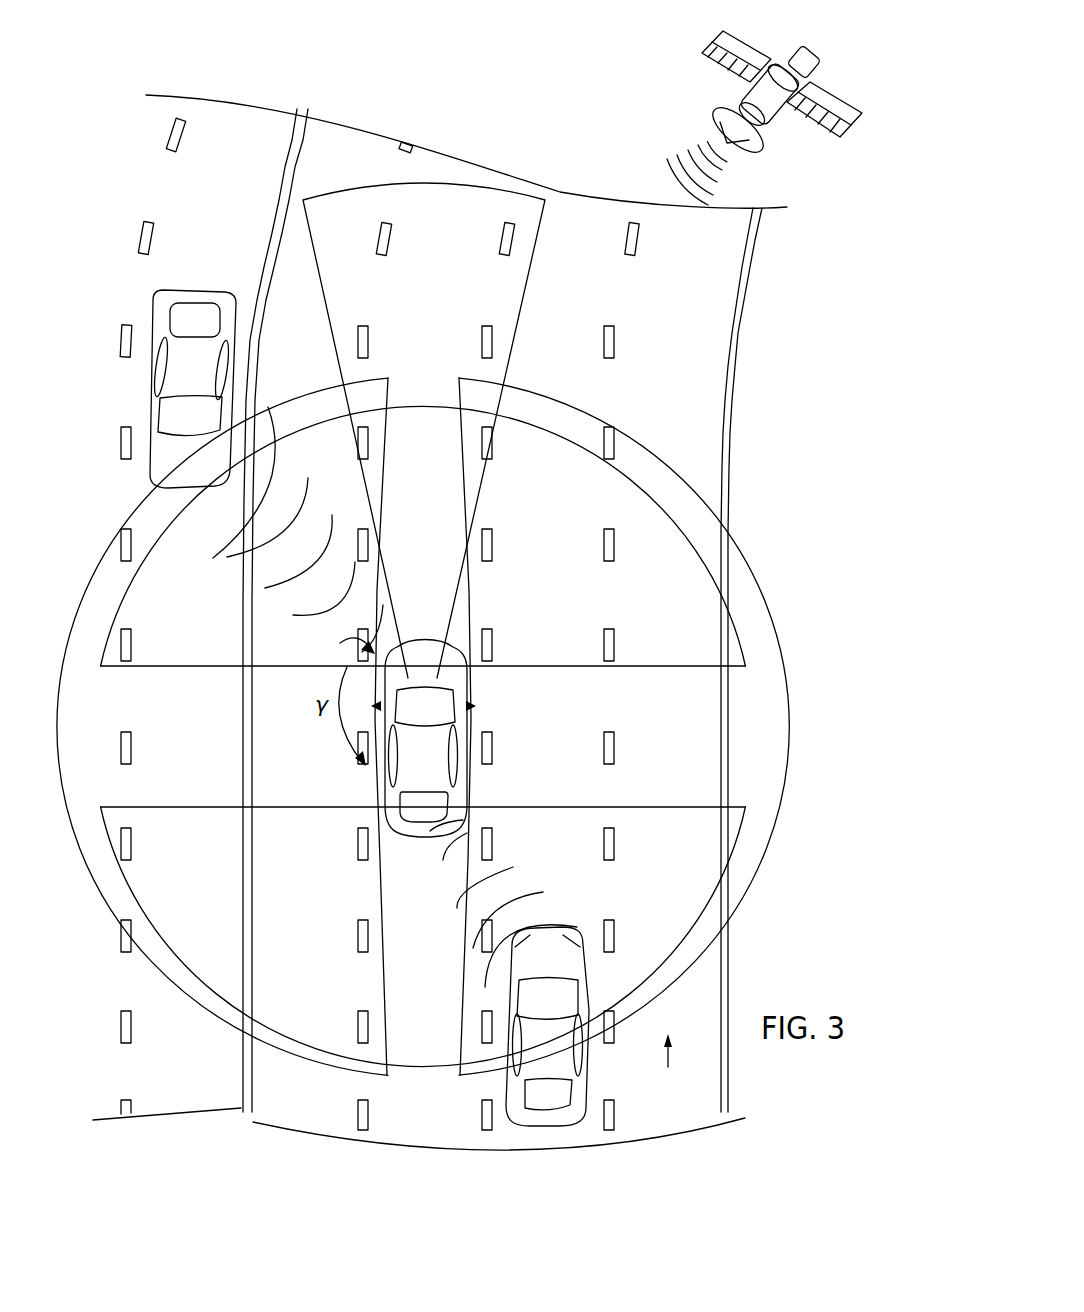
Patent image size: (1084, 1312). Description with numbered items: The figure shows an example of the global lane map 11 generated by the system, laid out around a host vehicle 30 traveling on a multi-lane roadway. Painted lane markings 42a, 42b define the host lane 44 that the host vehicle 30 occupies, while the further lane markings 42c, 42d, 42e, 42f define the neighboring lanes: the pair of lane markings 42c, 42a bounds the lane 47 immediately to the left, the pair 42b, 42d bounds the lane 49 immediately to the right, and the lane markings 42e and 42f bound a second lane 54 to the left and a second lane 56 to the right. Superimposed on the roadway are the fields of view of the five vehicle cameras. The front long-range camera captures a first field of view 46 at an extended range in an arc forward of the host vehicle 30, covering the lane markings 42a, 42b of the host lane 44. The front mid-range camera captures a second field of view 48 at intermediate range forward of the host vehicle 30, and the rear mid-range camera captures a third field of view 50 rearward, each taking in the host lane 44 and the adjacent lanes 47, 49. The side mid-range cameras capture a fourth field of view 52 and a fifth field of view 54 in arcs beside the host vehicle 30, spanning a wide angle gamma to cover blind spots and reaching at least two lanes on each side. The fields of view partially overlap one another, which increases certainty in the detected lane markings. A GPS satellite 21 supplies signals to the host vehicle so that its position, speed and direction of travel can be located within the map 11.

The global lane map 11 is at (491, 92).
The GPS satellite 21 is at (745, 85).
The host vehicle 30 is at (447, 681).
The lane marking 42a is at (360, 330).
The lane marking 42b is at (487, 323).
The lane marking 42c is at (241, 1108).
The lane marking 42d is at (614, 1114).
The lane marking 42e is at (119, 1106).
The lane marking 42f is at (731, 1102).
The host lane 44 is at (478, 283).
The first field of view 46 is at (470, 187).
The lane 47 is at (294, 1060).
The second field of view 48 is at (540, 402).
The lane 49 is at (548, 1135).
The third field of view 50 is at (207, 993).
The fourth field of view 52 is at (105, 553).
The fifth field of view 54 is at (768, 609).
The lane 56 is at (671, 1064).